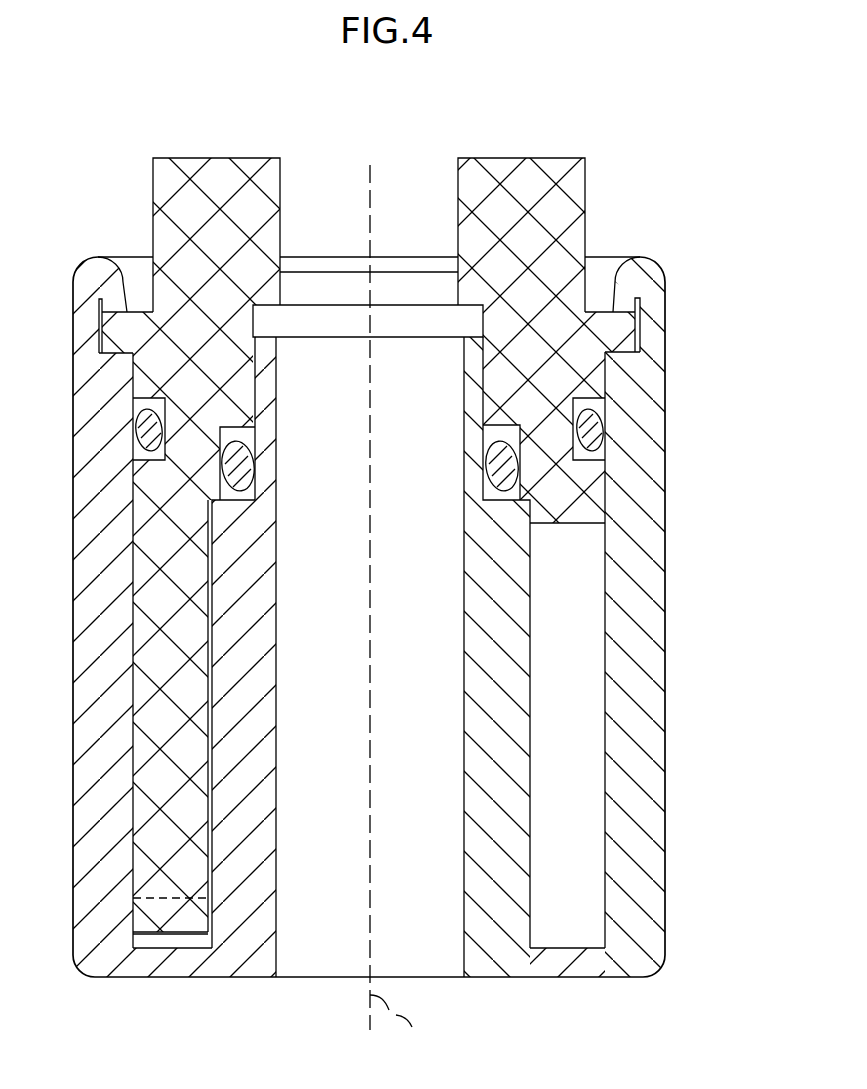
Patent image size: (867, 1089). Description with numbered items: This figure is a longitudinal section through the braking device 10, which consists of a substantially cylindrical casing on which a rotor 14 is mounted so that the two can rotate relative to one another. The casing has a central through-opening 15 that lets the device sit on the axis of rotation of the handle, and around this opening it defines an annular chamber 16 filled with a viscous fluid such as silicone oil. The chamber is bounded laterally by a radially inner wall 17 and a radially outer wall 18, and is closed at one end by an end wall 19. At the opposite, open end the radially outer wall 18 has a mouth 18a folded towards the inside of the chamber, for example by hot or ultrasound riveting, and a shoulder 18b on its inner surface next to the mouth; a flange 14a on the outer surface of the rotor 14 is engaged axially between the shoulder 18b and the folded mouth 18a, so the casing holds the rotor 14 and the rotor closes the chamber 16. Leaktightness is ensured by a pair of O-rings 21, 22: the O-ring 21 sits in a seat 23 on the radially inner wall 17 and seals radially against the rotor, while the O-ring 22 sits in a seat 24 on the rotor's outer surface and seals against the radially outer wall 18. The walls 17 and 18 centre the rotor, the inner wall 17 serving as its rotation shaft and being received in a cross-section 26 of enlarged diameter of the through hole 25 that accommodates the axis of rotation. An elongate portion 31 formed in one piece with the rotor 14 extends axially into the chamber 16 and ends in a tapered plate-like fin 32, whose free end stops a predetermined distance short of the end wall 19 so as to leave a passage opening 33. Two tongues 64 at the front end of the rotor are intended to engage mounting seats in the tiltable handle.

The device 10 is at (636, 125).
The rotor 14 is at (619, 483).
The flange 14a is at (640, 336).
The central through-opening 15 is at (275, 953).
The annular chamber 16 is at (583, 730).
The radially inner wall 17 is at (478, 808).
The radially outer wall 18 is at (635, 769).
The mouth 18a is at (598, 270).
The shoulder 18b is at (623, 347).
The end wall 19 is at (178, 968).
The O-ring 21 is at (483, 477).
The O-ring 22 is at (607, 410).
The seat 23 is at (217, 437).
The seat 24 is at (137, 398).
The through hole 25 is at (280, 294).
The cross-section of enlarged diameter 26 is at (487, 328).
The elongate portion 31 is at (145, 630).
The fin 32 is at (140, 918).
The passage opening 33 is at (160, 940).
The tongues 64 is at (216, 157).